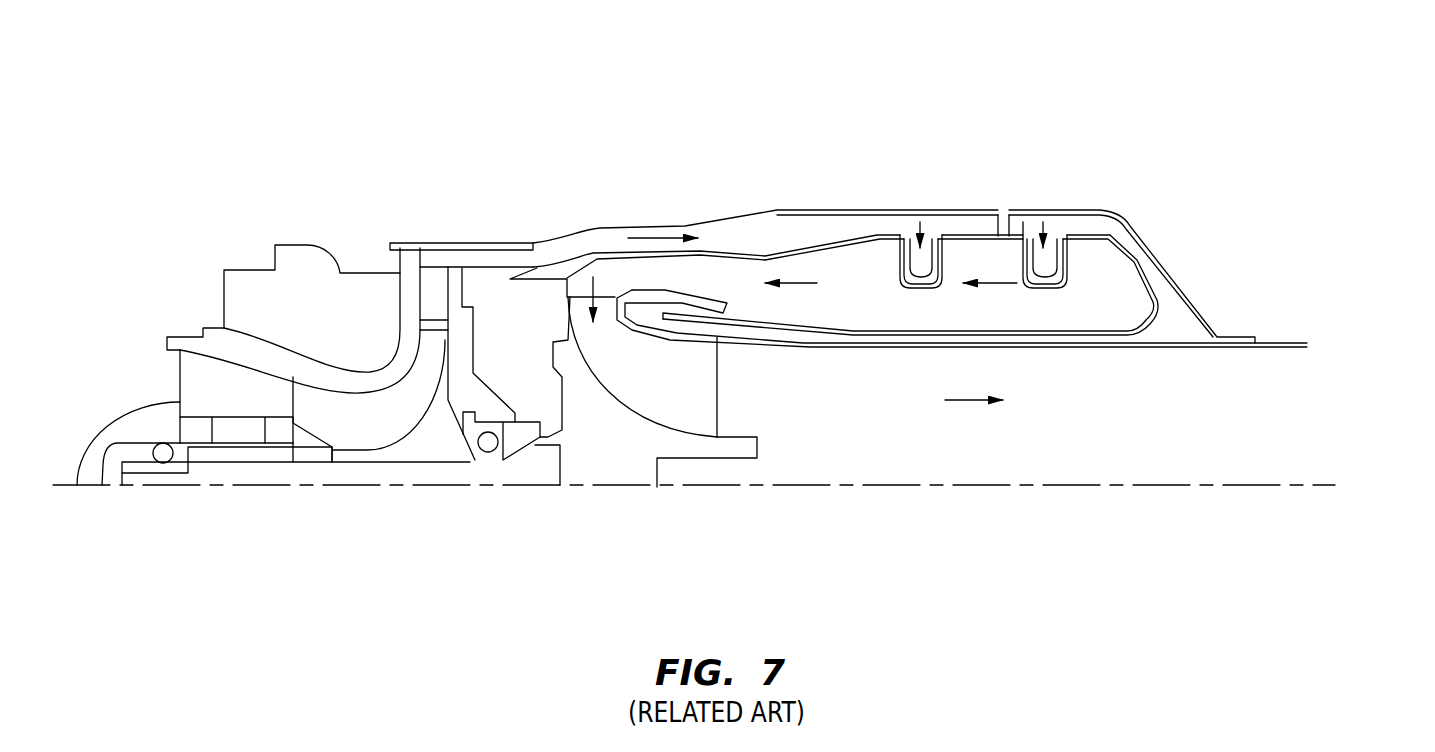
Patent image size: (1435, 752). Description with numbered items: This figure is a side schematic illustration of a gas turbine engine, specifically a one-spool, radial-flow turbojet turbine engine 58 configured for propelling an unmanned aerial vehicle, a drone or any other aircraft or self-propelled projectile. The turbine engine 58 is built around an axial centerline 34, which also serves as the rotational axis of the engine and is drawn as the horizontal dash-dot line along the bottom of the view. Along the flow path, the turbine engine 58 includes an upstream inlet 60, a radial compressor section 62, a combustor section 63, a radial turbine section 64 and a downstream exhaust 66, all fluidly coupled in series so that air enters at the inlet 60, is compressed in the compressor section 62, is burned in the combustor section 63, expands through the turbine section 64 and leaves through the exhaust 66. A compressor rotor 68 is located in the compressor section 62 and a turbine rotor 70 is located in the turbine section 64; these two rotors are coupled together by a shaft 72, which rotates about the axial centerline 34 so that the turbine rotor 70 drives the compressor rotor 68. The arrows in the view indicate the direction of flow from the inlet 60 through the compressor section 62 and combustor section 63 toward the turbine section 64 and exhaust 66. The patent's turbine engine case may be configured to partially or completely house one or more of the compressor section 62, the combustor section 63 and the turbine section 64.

The axial centerline 34 is at (1352, 495).
The turbine engine 58 is at (1170, 89).
The upstream inlet 60 is at (178, 377).
The compressor section 62 is at (405, 506).
The combustor section 63 is at (921, 182).
The turbine section 64 is at (657, 509).
The downstream exhaust 66 is at (1334, 414).
The compressor rotor 68 is at (413, 450).
The turbine rotor 70 is at (688, 450).
The shaft 72 is at (323, 473).